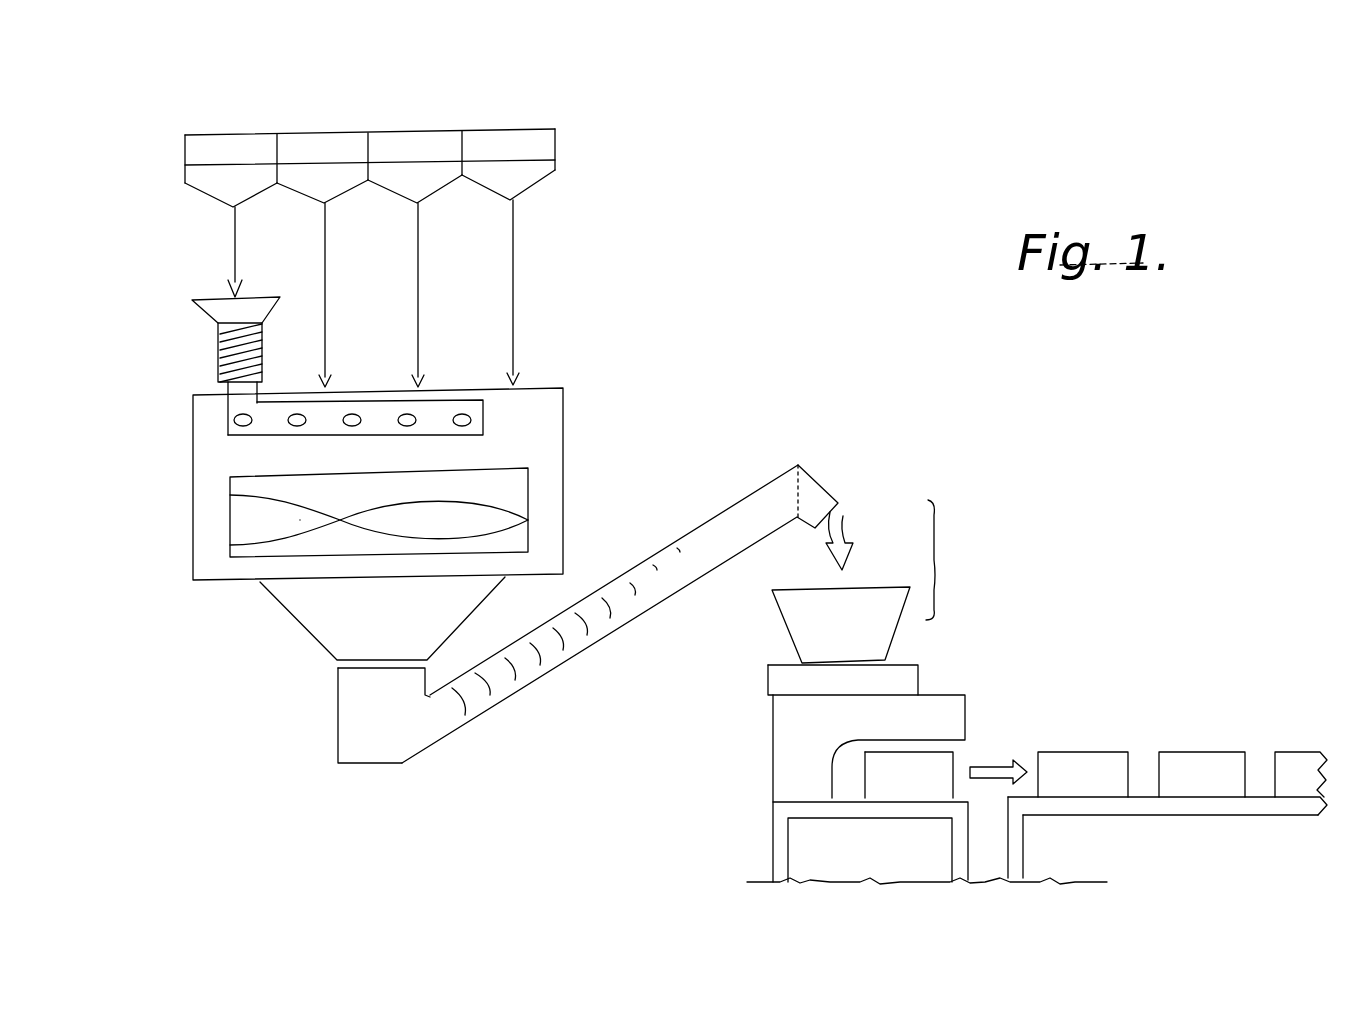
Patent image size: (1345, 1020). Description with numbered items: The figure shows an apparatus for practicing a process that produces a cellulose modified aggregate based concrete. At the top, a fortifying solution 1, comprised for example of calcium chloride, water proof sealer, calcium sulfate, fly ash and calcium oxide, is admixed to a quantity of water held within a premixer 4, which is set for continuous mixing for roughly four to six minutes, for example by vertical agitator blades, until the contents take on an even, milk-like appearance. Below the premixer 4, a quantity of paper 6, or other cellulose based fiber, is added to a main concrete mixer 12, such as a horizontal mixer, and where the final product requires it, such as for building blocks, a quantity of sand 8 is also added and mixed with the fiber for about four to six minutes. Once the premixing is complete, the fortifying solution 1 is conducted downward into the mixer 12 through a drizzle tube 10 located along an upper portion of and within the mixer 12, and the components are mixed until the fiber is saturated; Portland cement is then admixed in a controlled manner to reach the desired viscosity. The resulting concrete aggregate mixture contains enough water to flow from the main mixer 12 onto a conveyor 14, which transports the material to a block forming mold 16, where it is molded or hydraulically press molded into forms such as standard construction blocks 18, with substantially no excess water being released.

The fortifying solution 1 is at (252, 148).
The premixer 4 is at (212, 353).
The paper 6 is at (358, 140).
The sand 8 is at (452, 135).
The drizzle tube 10 is at (492, 415).
The main concrete mixer 12 is at (532, 477).
The conveyor 14 is at (695, 520).
The block forming mold 16 is at (973, 687).
The construction blocks 18 is at (1087, 742).